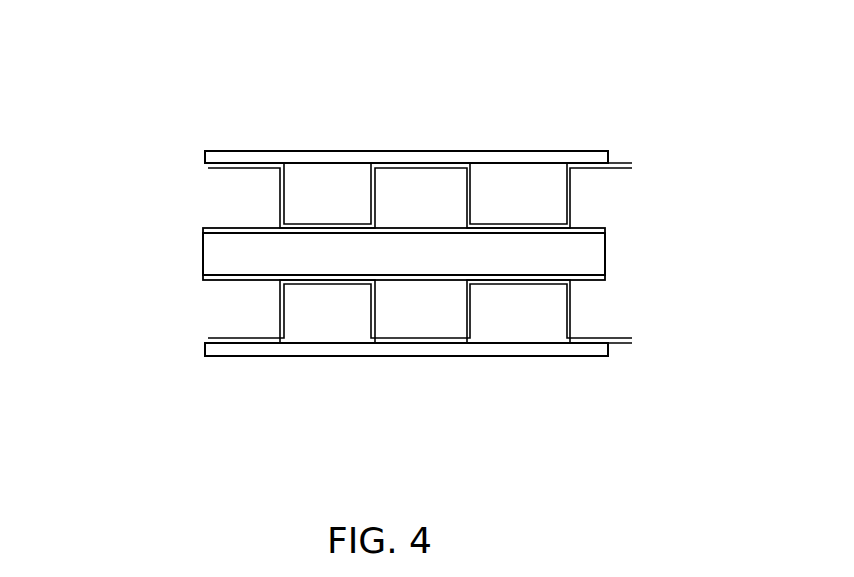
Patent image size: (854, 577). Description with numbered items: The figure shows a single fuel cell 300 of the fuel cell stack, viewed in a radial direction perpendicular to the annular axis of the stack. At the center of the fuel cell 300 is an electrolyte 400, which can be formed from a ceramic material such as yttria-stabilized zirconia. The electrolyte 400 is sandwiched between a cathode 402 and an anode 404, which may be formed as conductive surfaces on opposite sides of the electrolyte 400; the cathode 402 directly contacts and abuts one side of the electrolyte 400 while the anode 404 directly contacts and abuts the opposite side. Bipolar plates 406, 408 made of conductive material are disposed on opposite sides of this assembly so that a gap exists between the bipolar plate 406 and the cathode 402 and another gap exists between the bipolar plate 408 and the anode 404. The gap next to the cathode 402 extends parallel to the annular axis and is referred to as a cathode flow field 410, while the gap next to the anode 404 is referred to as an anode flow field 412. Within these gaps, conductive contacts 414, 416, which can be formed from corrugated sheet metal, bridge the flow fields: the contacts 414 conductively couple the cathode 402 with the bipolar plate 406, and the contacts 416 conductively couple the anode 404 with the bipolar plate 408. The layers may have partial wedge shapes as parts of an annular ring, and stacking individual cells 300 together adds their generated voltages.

The fuel cell 300 is at (105, 382).
The electrolyte 400 is at (583, 250).
The cathode 402 is at (594, 225).
The anode 404 is at (594, 283).
The bipolar plate 406 is at (527, 160).
The bipolar plate 408 is at (528, 348).
The cathode flow field 410 is at (240, 190).
The anode flow field 412 is at (240, 298).
The contacts 414 is at (375, 200).
The contacts 416 is at (375, 308).